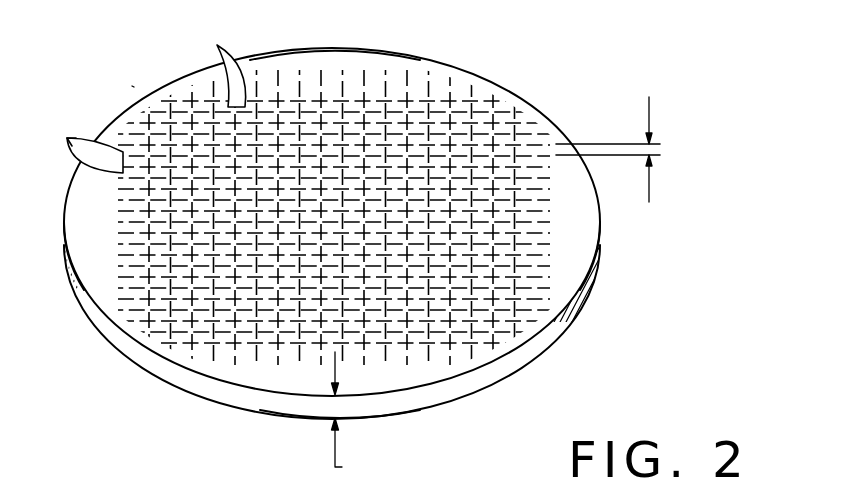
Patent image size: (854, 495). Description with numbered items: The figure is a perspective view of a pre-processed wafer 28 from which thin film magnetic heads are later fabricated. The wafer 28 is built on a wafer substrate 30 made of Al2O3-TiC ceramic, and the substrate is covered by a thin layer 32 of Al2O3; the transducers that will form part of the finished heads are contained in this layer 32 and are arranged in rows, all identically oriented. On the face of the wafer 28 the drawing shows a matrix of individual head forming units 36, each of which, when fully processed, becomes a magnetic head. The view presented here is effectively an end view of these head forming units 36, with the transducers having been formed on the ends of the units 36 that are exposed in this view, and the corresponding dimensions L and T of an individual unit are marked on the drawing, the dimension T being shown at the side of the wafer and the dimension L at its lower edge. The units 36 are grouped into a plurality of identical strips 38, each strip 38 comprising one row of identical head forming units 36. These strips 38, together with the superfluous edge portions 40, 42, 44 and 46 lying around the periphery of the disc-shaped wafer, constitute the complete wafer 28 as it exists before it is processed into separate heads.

The pre-processed wafer 28 is at (138, 88).
The wafer substrate 30 is at (188, 379).
The thin layer 32 is at (440, 80).
The head forming units 36 is at (213, 62).
The strips 38 is at (86, 139).
The superfluous edge portion 40 is at (333, 53).
The superfluous edge portion 42 is at (388, 380).
The superfluous edge portion 44 is at (577, 250).
The superfluous edge portion 46 is at (78, 229).
The dimension T is at (620, 149).
The dimension L is at (347, 413).